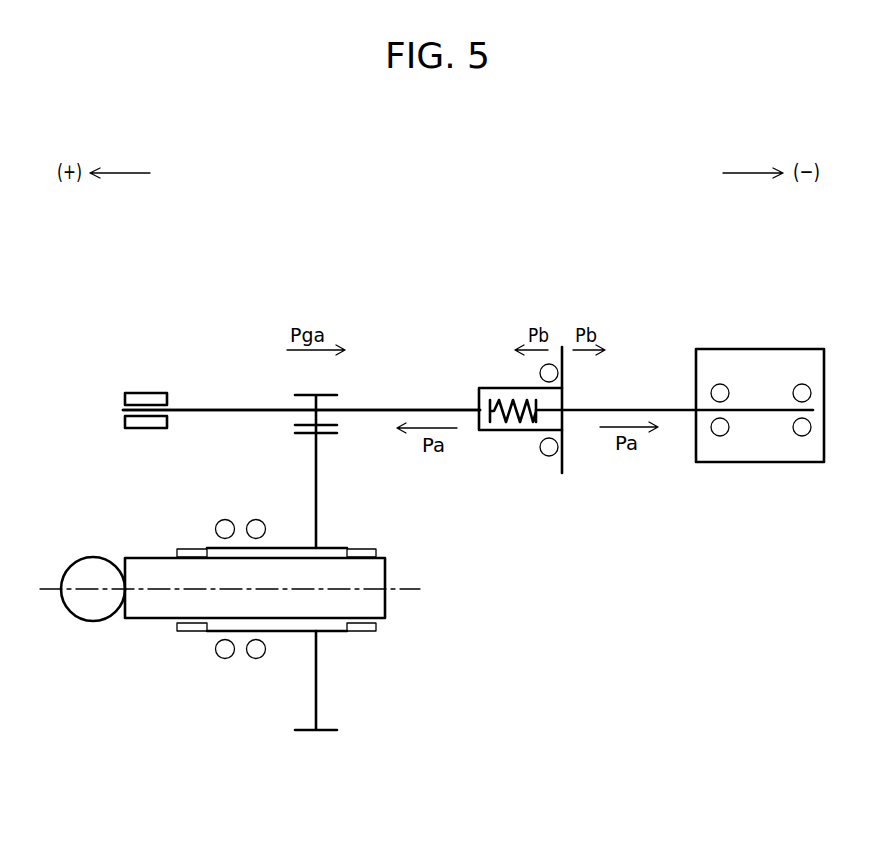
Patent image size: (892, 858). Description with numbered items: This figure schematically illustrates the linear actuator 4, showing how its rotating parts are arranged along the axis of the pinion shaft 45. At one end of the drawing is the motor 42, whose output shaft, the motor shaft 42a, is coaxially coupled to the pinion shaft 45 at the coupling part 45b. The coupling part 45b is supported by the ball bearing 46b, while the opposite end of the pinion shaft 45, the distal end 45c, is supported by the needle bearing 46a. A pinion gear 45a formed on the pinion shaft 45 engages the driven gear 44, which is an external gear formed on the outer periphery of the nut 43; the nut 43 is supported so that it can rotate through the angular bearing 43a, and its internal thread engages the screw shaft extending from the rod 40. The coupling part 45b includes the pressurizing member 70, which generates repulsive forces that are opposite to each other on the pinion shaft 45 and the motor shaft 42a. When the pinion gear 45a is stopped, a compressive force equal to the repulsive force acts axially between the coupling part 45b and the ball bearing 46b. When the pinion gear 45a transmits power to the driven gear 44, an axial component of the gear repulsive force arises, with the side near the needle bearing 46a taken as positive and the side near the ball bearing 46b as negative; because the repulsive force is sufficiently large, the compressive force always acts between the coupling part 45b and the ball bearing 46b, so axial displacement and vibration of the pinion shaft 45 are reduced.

The linear actuator 4 is at (621, 293).
The rod 40 is at (138, 620).
The motor 42 is at (768, 348).
The motor shaft 42a is at (632, 407).
The nut 43 is at (360, 633).
The angular bearing 43a is at (225, 660).
The driven gear 44 is at (305, 733).
The pinion shaft 45 is at (385, 407).
The pinion gear 45a is at (305, 394).
The coupling part 45b is at (500, 388).
The distal end 45c is at (138, 429).
The needle bearing 46a is at (146, 392).
The ball bearing 46b is at (550, 458).
The pressurizing member 70 is at (513, 426).